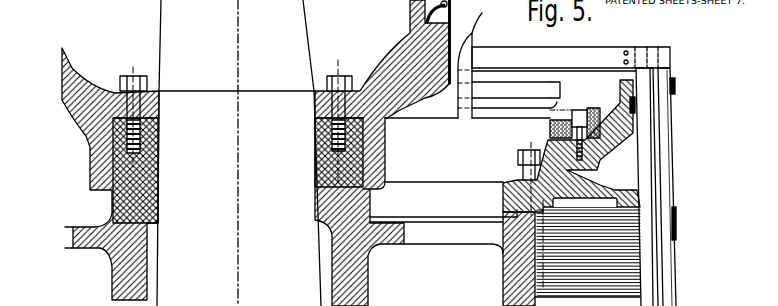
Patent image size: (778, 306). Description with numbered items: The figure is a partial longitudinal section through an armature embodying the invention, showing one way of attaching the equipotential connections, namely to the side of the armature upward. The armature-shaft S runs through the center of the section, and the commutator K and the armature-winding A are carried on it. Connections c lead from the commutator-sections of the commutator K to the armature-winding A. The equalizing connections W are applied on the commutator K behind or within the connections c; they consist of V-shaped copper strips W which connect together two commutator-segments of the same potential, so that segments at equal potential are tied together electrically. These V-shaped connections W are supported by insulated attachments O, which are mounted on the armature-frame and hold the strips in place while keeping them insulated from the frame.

The armature-shaft S is at (239, 153).
The commutator K is at (457, 16).
The connections from the commutator-sections to the armature-windings C is at (588, 51).
The equalizing connections W is at (552, 90).
The insulated attachments O is at (596, 113).
The armature-winding A is at (665, 180).